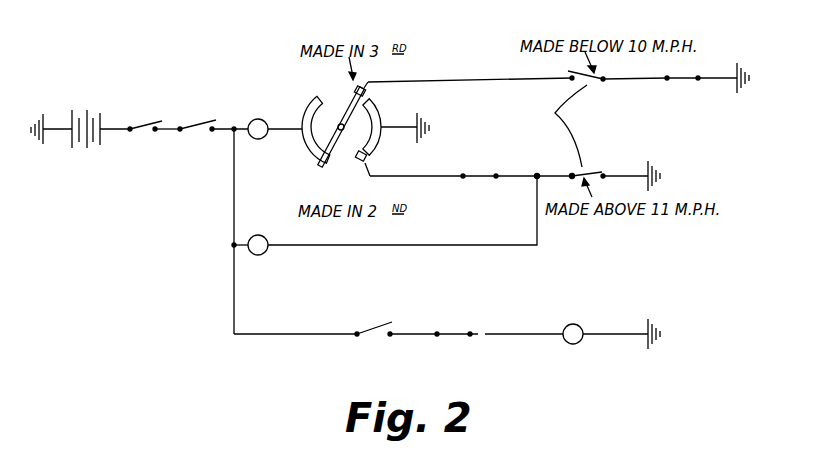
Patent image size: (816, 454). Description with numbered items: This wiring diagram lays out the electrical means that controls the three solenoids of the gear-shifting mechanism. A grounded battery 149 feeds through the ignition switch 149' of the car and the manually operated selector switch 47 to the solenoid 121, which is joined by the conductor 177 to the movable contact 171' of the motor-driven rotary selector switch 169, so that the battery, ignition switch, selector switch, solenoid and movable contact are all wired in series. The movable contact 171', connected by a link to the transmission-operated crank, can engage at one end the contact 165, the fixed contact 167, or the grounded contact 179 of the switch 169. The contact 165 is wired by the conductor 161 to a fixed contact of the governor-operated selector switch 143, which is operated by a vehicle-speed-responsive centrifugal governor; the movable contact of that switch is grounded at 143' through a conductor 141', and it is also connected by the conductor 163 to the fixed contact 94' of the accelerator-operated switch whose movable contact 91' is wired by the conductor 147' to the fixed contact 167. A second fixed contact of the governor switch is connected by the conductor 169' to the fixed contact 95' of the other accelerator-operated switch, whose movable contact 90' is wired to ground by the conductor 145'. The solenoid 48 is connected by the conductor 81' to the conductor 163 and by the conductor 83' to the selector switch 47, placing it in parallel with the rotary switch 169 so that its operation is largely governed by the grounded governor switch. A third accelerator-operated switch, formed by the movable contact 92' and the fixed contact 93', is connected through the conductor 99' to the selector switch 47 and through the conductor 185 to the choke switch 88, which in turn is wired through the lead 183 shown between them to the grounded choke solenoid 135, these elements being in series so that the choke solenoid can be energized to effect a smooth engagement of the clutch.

The grounded battery 149 is at (90, 109).
The ignition switch 149' is at (145, 106).
The manually operated selector switch 47 is at (199, 99).
The conductor 177 is at (282, 127).
The solenoid 121 is at (270, 102).
The conductor 83' is at (209, 231).
The rotary selector switch 169 is at (296, 146).
The grounded contact 179 is at (374, 115).
The movable contact 171' is at (368, 127).
The contact 165 is at (358, 92).
The fixed contact 167 is at (357, 160).
The conductor 161 is at (448, 78).
The conductor 169' is at (609, 68).
The movable contact 90' is at (644, 92).
The fixed contact 95' is at (702, 91).
The conductor 145' is at (749, 63).
The governor operated selector switch 143 is at (554, 126).
The conductor 147' is at (417, 159).
The movable contact 91' is at (468, 191).
The fixed contact 94' is at (497, 191).
The conductor 163 is at (519, 174).
The conductor 141' is at (610, 157).
The ground connection 143' is at (678, 166).
The solenoid 48 is at (262, 253).
The conductor 81' is at (402, 227).
The conductor 99' is at (295, 355).
The movable contact 92' is at (366, 347).
The fixed contact 93' is at (389, 352).
The conductor 185 is at (419, 331).
The choke switch 88 is at (456, 338).
The conductor 183 is at (516, 338).
The choke solenoid 135 is at (573, 330).